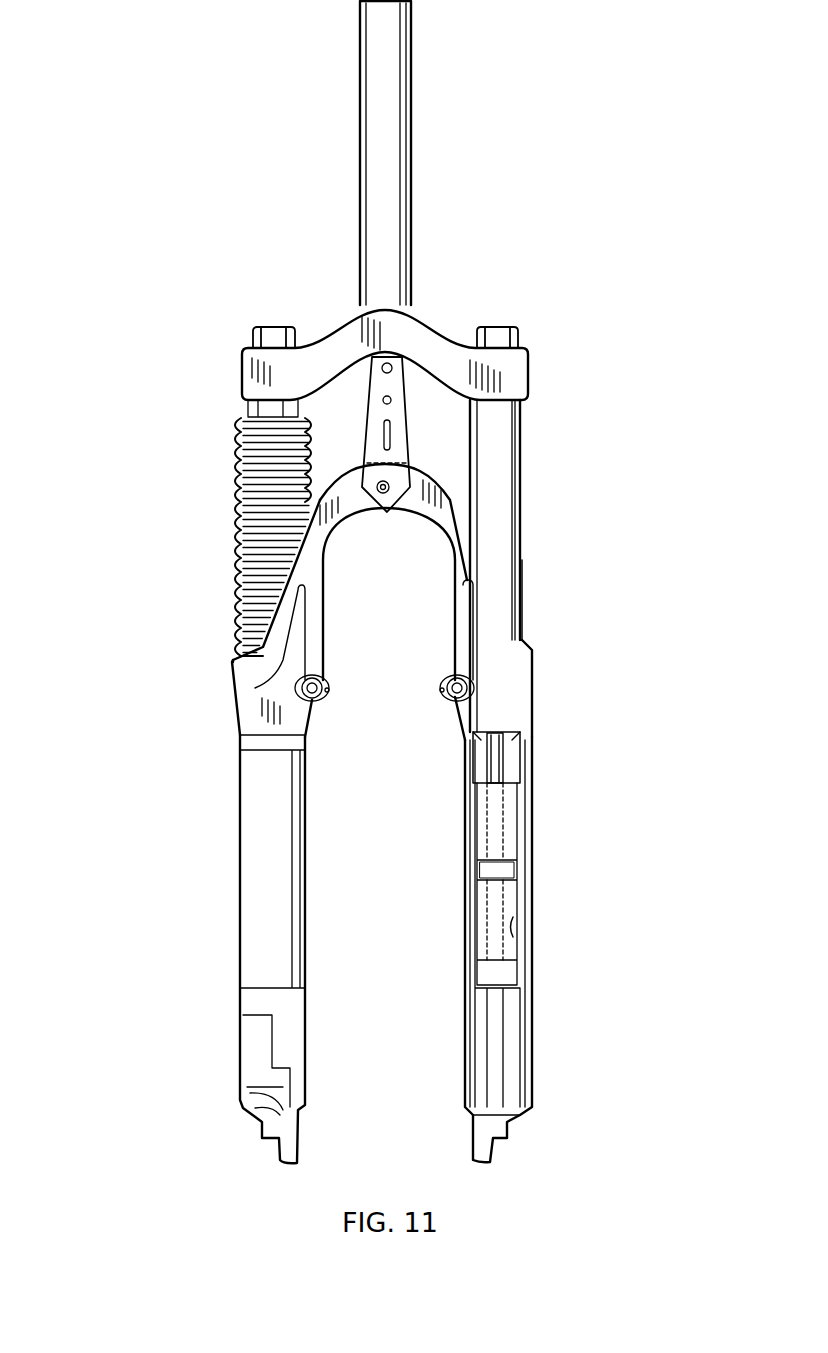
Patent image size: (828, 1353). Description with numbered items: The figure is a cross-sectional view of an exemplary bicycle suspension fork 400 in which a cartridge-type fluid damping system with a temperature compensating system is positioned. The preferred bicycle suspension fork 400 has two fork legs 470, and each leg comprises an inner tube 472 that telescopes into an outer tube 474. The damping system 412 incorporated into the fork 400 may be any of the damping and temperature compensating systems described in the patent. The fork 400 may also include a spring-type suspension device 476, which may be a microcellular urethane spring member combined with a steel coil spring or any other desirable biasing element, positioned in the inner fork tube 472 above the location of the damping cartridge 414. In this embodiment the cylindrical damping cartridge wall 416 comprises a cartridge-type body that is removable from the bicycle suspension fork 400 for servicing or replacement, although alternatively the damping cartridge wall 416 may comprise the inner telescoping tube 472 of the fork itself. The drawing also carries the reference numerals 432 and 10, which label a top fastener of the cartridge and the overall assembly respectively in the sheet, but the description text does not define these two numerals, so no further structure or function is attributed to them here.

The bicycle suspension fork 400 is at (543, 425).
The fork leg 470 is at (205, 708).
The inner tube 472 is at (233, 508).
The spring-type suspension device 476 is at (522, 563).
The outer tube 474 is at (240, 950).
The damping system 412 is at (547, 800).
The damping cartridge 414 is at (527, 867).
The damping cartridge wall 416 is at (513, 937).
The top bolt 432 is at (497, 767).
The suspension system 10 is at (545, 981).